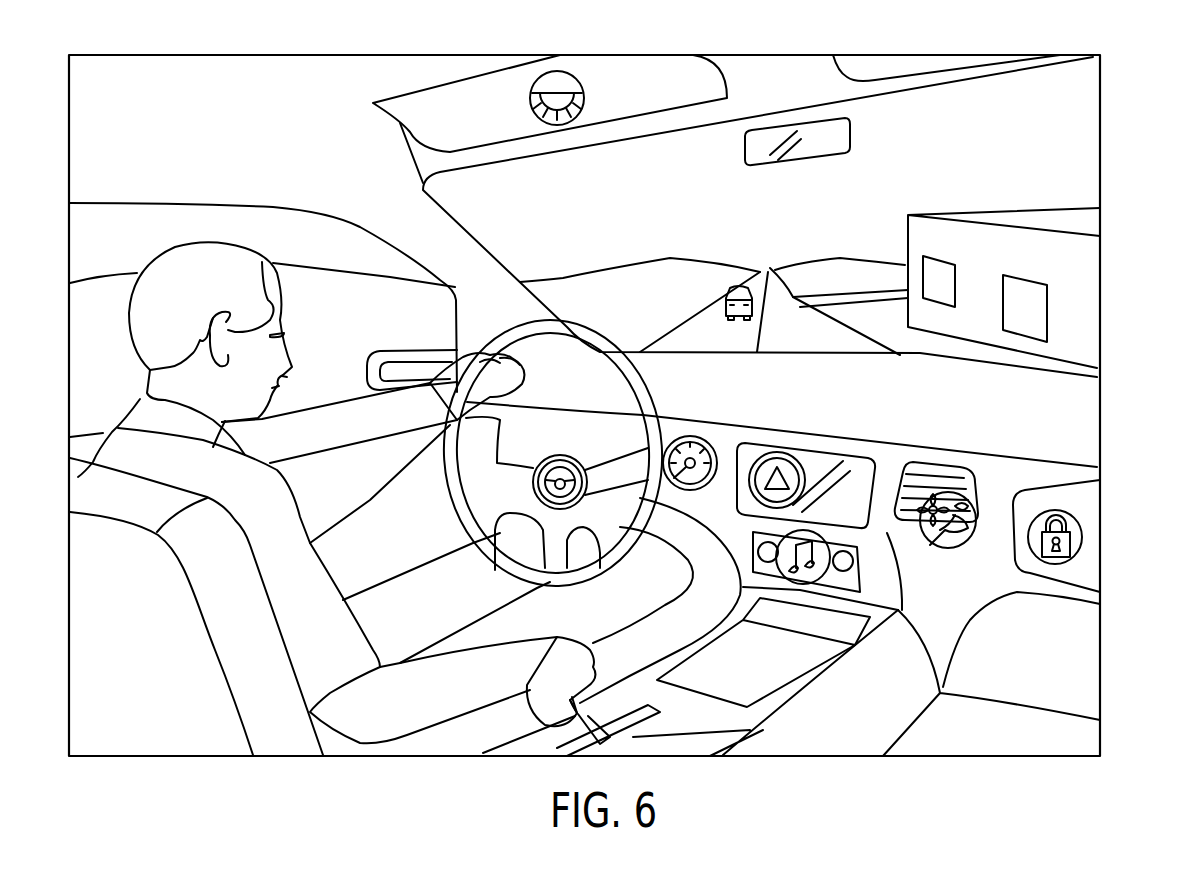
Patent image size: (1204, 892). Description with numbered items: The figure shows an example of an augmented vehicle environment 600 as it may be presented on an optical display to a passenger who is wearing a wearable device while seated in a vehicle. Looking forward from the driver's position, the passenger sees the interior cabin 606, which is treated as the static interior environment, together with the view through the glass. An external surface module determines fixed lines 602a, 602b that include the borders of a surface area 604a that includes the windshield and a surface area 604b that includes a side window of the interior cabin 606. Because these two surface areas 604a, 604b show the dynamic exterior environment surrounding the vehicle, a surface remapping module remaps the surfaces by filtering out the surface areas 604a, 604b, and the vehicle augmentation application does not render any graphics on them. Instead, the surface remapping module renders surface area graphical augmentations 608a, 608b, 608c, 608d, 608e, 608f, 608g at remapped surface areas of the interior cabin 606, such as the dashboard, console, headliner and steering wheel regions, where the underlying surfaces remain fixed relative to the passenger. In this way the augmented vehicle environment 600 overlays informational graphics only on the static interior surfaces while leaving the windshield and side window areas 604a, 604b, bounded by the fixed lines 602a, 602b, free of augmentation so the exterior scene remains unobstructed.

The augmented vehicle environment 600 is at (1118, 121).
The fixed line 602a is at (747, 110).
The fixed line 602b is at (275, 207).
The surface area 604a is at (640, 205).
The surface area 604b is at (380, 327).
The interior cabin 606 is at (225, 178).
The surface area graphical augmentation 608a is at (716, 451).
The surface area graphical augmentation 608b is at (806, 461).
The surface area graphical augmentation 608c is at (929, 496).
The surface area graphical augmentation 608d is at (1038, 512).
The surface area graphical augmentation 608e is at (900, 590).
The surface area graphical augmentation 608f is at (577, 81).
The surface area graphical augmentation 608g is at (535, 478).